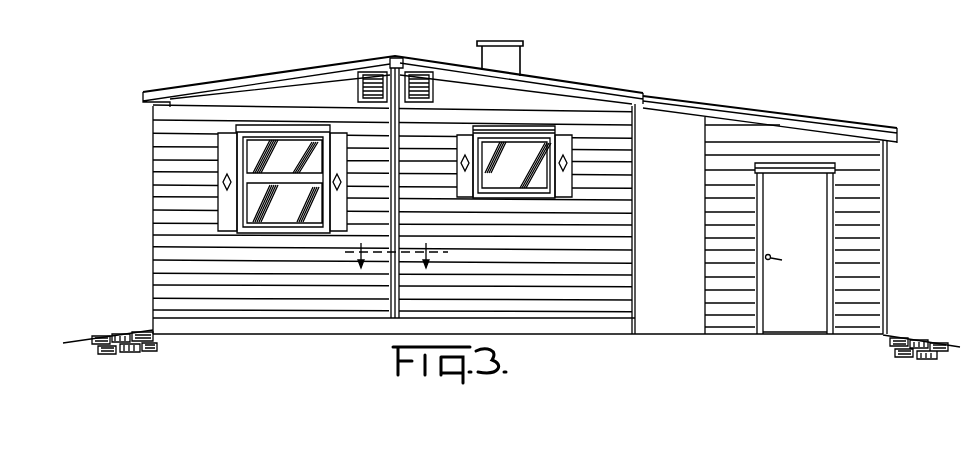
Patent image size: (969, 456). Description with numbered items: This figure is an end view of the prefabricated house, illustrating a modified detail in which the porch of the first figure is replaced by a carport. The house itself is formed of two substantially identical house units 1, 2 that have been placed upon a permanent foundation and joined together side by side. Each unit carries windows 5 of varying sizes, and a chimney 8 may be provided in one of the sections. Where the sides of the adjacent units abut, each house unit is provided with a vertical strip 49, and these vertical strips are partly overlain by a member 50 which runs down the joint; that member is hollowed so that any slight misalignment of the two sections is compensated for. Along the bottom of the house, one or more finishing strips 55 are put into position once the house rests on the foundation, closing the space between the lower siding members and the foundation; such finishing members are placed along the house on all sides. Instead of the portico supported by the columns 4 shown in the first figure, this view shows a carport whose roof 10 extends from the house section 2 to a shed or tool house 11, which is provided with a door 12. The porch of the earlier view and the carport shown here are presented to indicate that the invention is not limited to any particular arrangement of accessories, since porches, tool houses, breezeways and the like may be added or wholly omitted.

The house unit 1 is at (278, 322).
The house unit 2 is at (558, 322).
The column 4 is at (883, 278).
The window 5 is at (278, 148).
The chimney 8 is at (505, 52).
The roof 10 is at (797, 120).
The shed or tool house 11 is at (863, 220).
The door 12 is at (795, 327).
The vertical strip 49 is at (390, 66).
The member 50 is at (389, 318).
The finishing strip 55 is at (153, 328).